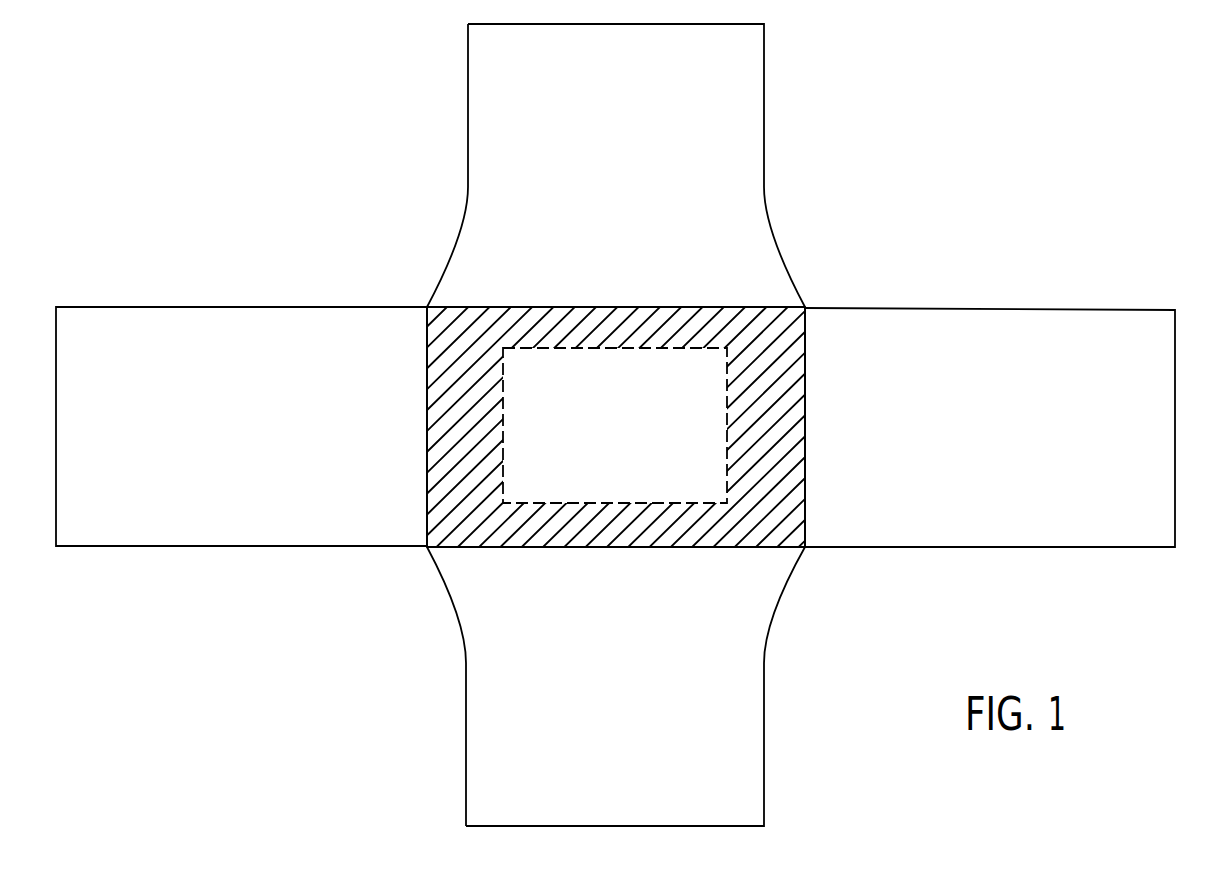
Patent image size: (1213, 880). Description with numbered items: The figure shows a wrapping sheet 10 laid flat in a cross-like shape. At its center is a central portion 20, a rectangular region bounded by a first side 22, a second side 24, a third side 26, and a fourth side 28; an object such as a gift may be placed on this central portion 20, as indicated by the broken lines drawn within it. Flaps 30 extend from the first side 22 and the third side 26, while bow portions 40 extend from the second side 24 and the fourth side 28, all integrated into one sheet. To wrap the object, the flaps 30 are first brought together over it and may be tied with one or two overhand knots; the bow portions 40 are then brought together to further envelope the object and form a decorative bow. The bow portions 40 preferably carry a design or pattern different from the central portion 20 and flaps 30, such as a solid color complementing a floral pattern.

The wrapping sheet 10 is at (338, 164).
The central portion 20 is at (773, 358).
The first side 22 is at (762, 304).
The second side 24 is at (808, 457).
The third side 26 is at (762, 548).
The fourth side 28 is at (427, 345).
The flaps 30 is at (752, 70).
The bow portions 40 is at (147, 532).